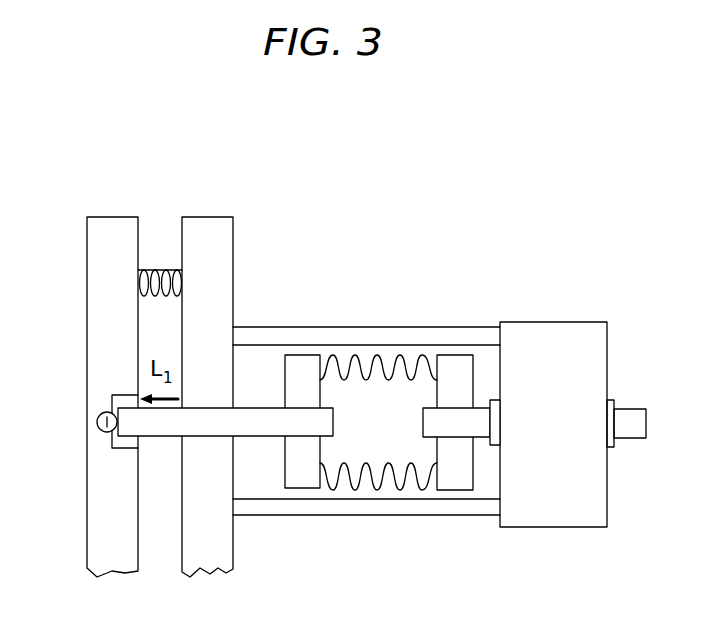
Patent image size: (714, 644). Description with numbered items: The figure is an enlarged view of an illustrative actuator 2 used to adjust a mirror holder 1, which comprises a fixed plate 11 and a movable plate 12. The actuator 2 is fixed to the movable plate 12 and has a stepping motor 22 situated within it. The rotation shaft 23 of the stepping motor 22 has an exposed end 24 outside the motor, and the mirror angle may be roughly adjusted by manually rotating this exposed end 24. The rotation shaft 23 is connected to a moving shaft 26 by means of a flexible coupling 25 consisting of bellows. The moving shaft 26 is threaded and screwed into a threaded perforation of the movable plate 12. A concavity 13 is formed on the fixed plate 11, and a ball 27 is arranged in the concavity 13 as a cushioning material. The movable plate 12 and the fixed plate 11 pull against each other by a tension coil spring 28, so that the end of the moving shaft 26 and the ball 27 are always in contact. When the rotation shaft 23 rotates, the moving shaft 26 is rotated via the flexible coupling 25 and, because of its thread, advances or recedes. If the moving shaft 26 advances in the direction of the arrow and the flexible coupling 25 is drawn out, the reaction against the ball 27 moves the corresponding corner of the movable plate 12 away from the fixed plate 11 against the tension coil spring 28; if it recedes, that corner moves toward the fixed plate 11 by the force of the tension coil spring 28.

The mirror holder 1 is at (159, 327).
The actuator 2 is at (322, 288).
The fixed plate 11 is at (110, 217).
The movable plate 12 is at (207, 360).
The concavity 13 is at (99, 428).
The stepping motor 22 is at (548, 322).
The rotation shaft 23 is at (455, 437).
The exposed end 24 is at (625, 409).
The flexible coupling 25 is at (363, 485).
The moving shaft 26 is at (185, 465).
The ball 27 is at (100, 413).
The tension coil spring 28 is at (160, 270).